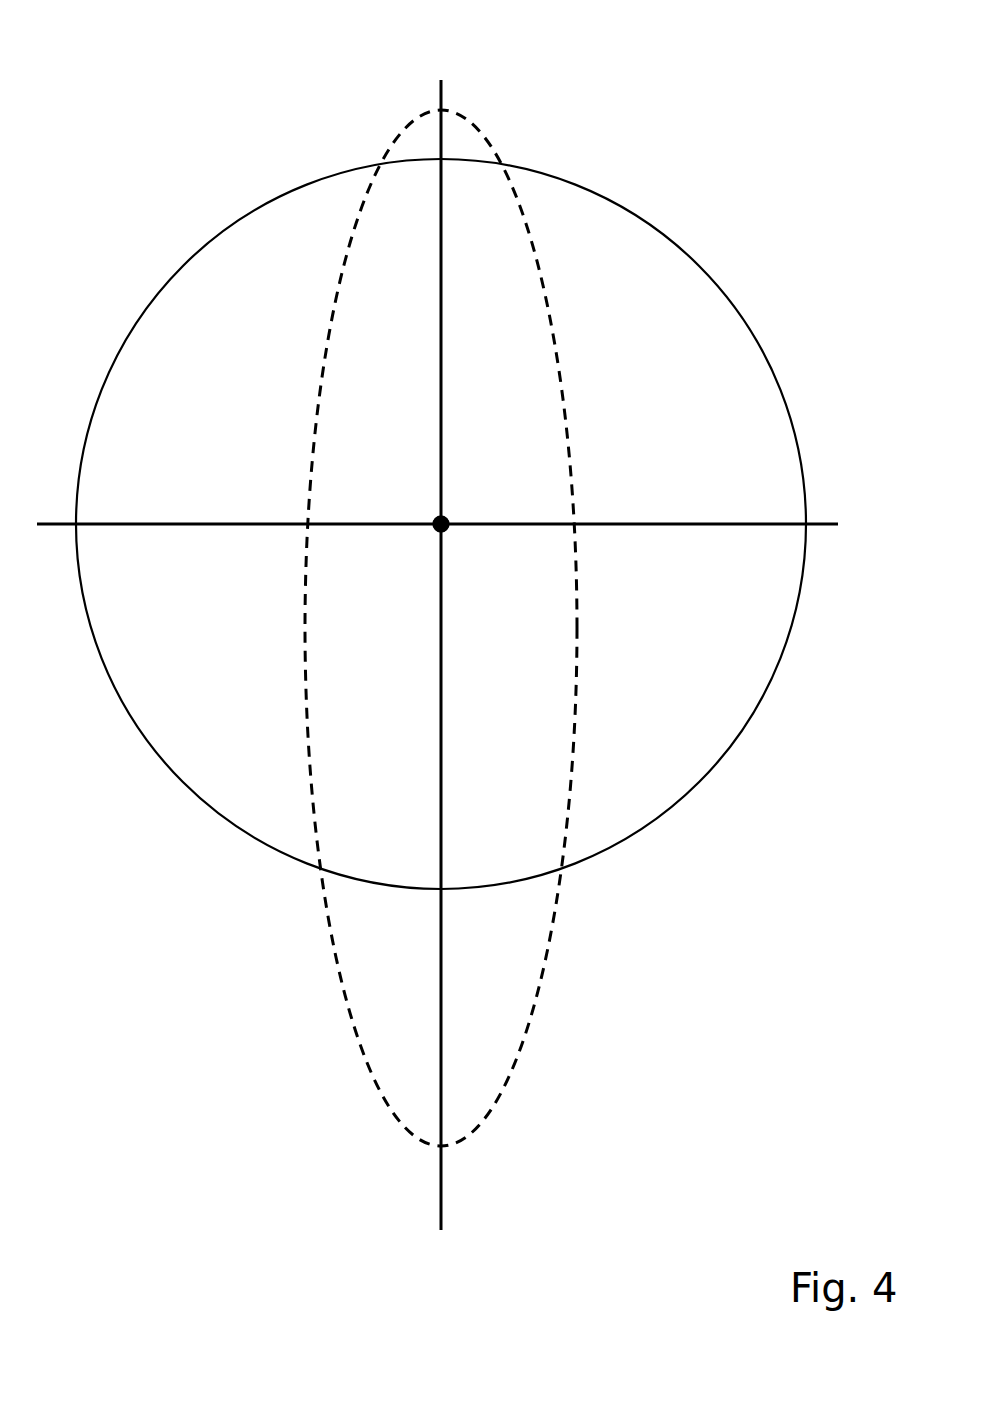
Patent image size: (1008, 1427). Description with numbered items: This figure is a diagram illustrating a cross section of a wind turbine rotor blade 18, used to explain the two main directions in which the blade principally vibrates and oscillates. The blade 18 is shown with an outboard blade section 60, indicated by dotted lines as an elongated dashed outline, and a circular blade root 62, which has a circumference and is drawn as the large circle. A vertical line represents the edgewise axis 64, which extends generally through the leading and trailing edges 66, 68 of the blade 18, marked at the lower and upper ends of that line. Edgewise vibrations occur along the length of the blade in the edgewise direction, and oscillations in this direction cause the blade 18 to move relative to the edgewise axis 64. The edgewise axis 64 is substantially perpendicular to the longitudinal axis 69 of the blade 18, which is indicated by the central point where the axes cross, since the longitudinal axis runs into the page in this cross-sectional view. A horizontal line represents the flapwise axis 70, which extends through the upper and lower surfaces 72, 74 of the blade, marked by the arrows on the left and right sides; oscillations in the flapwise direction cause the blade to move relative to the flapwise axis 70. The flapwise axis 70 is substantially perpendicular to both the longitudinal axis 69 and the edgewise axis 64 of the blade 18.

The rotor blade 18 is at (128, 136).
The outboard blade section 60 is at (525, 223).
The circular blade root 62 is at (655, 232).
The edgewise axis 64 is at (441, 80).
The leading edge 66 is at (407, 1190).
The trailing edge 68 is at (410, 88).
The longitudinal axis 69 is at (441, 515).
The flapwise axis 70 is at (838, 522).
The upper surface 72 is at (271, 455).
The lower surface 74 is at (611, 463).